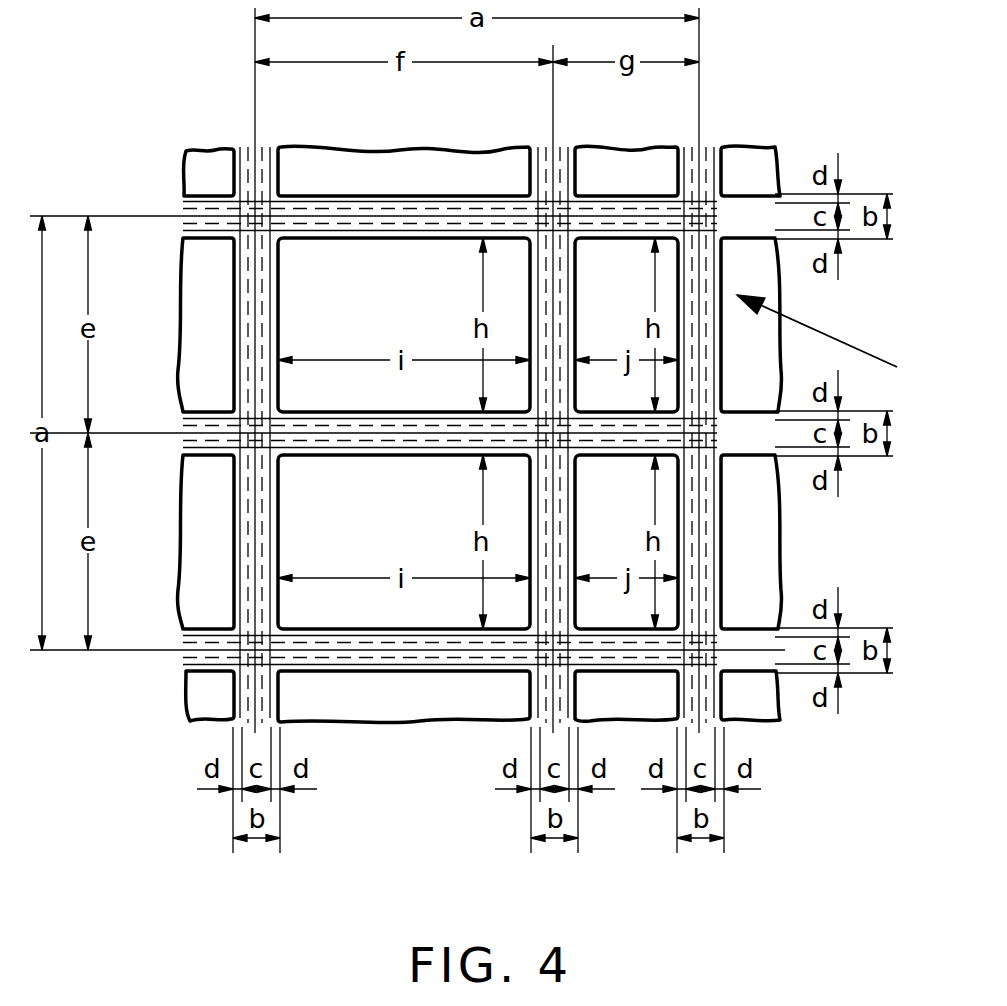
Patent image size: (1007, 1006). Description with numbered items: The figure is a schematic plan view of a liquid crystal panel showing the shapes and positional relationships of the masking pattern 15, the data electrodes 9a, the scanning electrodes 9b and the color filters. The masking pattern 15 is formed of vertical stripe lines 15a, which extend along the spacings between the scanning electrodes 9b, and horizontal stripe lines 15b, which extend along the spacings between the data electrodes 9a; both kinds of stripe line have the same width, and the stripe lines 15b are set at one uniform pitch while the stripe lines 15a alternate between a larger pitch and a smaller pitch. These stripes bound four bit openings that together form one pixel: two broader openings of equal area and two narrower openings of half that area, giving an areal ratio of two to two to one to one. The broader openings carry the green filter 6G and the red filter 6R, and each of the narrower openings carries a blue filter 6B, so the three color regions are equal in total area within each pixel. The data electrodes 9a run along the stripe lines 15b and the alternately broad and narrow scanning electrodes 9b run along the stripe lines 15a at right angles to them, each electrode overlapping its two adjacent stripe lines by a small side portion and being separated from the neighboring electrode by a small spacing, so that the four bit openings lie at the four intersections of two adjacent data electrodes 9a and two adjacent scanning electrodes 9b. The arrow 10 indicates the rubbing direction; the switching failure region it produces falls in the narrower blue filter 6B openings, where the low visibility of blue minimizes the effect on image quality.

The masking pattern 15 is at (102, 68).
The stripe lines 15a is at (215, 150).
The stripe lines 15b is at (203, 195).
The data electrodes 9a is at (190, 222).
The scanning electrodes 9b is at (257, 160).
The arrow 10 is at (845, 340).
The green filter 6G is at (385, 307).
The blue filter 6B is at (600, 307).
The red filter 6R is at (385, 512).